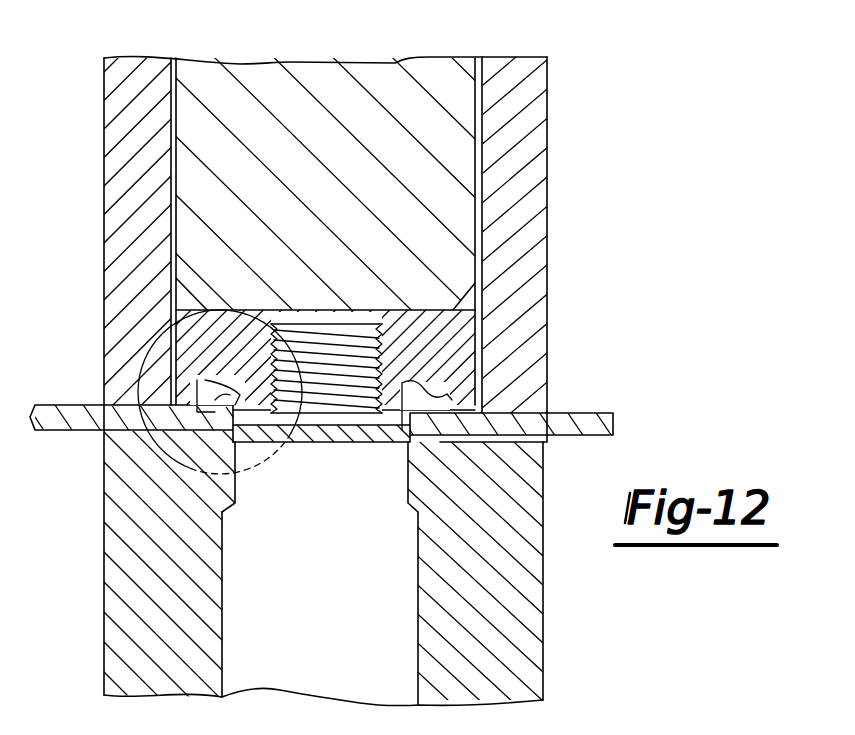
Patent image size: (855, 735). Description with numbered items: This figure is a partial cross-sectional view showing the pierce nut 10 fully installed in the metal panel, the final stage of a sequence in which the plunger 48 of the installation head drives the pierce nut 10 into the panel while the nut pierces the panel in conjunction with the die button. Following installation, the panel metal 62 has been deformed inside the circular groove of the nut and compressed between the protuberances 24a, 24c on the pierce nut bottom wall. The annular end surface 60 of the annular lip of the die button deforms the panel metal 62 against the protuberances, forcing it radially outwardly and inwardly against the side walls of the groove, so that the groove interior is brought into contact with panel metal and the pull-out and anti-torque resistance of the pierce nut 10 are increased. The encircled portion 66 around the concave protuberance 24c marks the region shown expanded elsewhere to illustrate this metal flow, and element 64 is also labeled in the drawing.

The plunger 48 is at (328, 82).
The pierce nut 10 is at (458, 322).
The portion 66 is at (153, 350).
The concave protuberance 24c is at (218, 392).
The protuberance 24a is at (415, 385).
The retaining clip 64 is at (433, 396).
The panel metal 62 is at (213, 403).
The end surface of the annular lip 60 is at (240, 430).